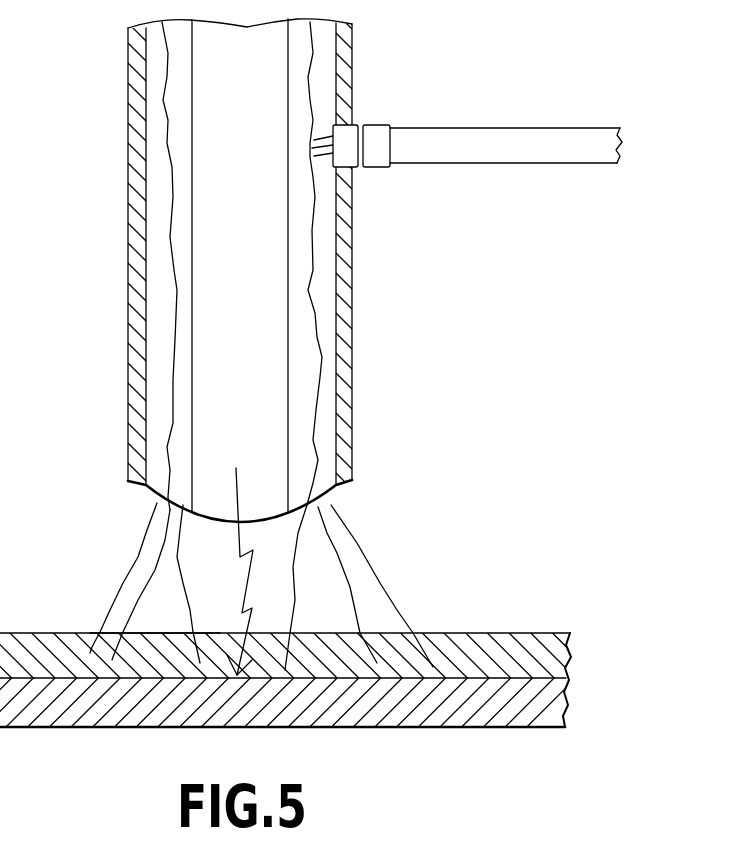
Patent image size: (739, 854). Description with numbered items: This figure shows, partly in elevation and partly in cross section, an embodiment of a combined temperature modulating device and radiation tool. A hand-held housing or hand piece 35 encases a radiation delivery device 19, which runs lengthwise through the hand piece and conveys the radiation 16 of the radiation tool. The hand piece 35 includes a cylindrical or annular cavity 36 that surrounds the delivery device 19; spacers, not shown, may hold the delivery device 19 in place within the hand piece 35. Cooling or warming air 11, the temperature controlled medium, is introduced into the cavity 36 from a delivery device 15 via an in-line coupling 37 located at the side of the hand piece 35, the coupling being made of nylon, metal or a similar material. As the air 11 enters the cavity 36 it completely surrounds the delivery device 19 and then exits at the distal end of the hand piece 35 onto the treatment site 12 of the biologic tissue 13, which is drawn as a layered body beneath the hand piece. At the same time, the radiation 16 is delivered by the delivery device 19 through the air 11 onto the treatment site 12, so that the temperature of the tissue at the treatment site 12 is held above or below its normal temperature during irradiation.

The temperature controlled medium 11 is at (173, 380).
The treatment site 12 is at (200, 611).
The biologic tissue 13 is at (458, 645).
The delivery device 15 is at (597, 165).
The radiation 16 is at (240, 580).
The delivery device 19 is at (210, 185).
The hand piece 35 is at (130, 223).
The cavity 36 is at (308, 355).
The in-line coupling 37 is at (372, 167).